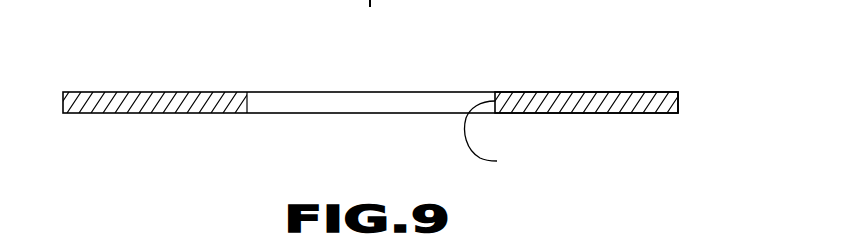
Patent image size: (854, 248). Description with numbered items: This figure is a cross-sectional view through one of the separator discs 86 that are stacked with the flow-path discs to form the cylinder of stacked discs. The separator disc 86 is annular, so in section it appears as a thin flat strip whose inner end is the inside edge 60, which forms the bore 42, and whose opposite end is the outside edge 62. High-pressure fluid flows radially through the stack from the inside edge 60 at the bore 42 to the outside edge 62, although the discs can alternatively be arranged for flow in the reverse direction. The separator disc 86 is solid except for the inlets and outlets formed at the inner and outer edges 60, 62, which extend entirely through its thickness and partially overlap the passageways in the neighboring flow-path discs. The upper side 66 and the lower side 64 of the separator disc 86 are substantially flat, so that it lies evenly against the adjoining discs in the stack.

The bore 42 is at (366, 103).
The inside edge 60 is at (501, 138).
The outside edge 62 is at (679, 100).
The lower side 64 is at (583, 113).
The upper side 66 is at (576, 92).
The separator disc 86 is at (733, 149).